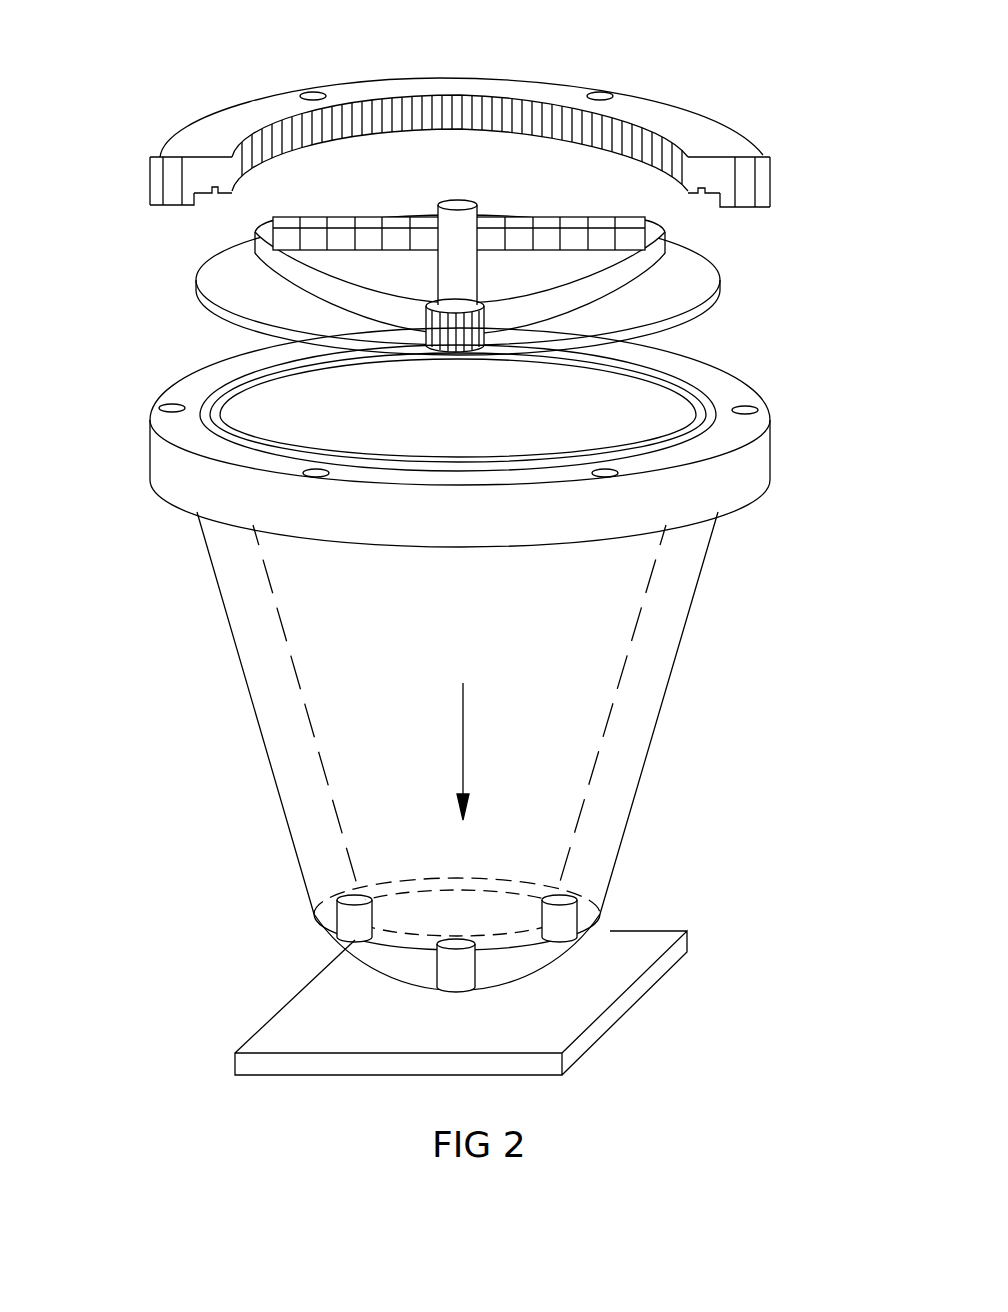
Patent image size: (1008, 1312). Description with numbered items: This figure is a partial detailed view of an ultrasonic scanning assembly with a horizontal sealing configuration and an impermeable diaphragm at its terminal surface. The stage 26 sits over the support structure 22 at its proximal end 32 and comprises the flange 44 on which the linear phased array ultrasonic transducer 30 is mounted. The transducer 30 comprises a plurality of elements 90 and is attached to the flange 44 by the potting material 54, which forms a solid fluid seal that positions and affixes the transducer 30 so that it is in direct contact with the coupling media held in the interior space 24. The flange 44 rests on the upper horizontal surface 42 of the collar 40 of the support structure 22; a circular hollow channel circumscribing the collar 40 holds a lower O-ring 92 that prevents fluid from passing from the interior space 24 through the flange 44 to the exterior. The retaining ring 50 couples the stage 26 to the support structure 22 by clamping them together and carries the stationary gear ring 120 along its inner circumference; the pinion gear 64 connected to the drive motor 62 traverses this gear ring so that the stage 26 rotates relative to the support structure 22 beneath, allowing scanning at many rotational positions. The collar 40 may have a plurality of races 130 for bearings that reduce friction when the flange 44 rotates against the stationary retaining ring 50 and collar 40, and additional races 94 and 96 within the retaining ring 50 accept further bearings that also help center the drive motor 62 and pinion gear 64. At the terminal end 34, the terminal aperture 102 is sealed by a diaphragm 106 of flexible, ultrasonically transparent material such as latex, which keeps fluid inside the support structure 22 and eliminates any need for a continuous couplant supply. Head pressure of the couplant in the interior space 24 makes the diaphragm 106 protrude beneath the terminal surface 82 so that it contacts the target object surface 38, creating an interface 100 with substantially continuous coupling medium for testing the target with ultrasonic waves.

The support structure 22 is at (598, 604).
The interior space 24 is at (298, 603).
The stage 26 is at (660, 217).
The linear phased array ultrasonic transducer 30 is at (633, 217).
The proximal end 32 is at (773, 434).
The terminal end 34 is at (632, 893).
The target object surface 38 is at (553, 1043).
The collar 40 is at (160, 460).
The upper horizontal surface 42 is at (190, 370).
The flange 44 is at (687, 322).
The retaining ring 50 is at (187, 142).
The potting material 54 is at (260, 272).
The drive motor 62 is at (460, 200).
The pinion gear 64 is at (473, 325).
The terminal surface 82 is at (583, 925).
The elements 90 is at (342, 220).
The lower O-ring 92 is at (262, 368).
The race 94 is at (215, 192).
The race 96 is at (168, 205).
The interface 100 is at (486, 988).
The terminal aperture 102 is at (403, 912).
The diaphragm 106 is at (420, 967).
The stationary gear ring 120 is at (360, 125).
The races 130 is at (168, 407).